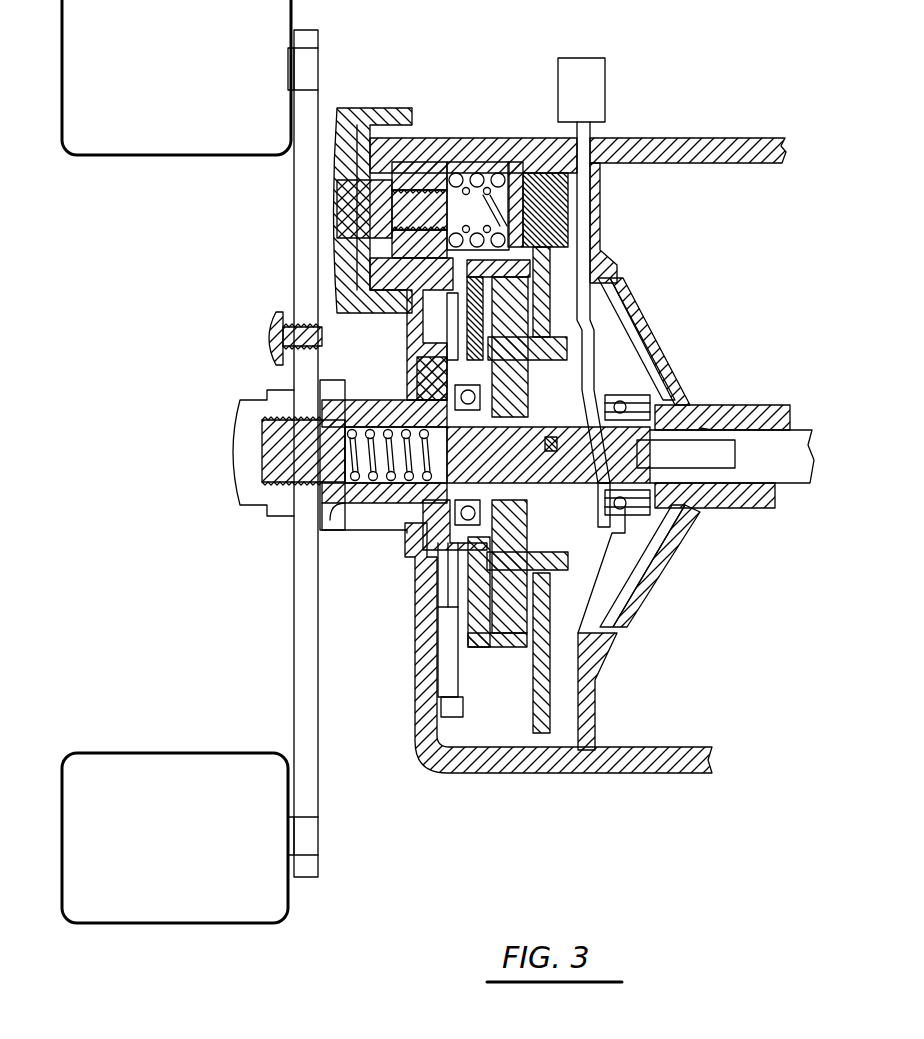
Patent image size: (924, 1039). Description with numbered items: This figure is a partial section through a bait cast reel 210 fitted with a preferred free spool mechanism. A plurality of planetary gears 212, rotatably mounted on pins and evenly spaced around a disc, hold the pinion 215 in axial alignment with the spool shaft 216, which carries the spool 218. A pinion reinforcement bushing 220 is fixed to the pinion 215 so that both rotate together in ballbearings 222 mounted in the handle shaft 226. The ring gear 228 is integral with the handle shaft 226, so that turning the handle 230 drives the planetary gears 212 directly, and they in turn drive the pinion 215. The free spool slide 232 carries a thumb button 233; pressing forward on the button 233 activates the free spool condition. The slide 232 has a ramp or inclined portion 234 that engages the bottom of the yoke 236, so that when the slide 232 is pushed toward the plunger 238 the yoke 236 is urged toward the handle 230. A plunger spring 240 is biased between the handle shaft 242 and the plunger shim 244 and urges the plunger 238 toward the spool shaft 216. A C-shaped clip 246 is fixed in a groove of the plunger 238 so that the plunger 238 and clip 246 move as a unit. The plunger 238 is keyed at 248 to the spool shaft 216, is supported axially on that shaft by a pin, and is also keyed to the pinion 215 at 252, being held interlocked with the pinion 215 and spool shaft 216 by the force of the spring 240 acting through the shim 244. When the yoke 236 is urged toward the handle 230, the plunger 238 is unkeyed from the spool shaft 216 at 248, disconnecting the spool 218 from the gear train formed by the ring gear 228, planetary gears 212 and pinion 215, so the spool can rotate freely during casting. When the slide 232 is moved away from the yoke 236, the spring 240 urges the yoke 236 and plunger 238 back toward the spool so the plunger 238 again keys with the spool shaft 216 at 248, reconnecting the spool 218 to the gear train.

The bait cast reel 210 is at (742, 300).
The planetary gears 212 is at (500, 580).
The pinion 215 is at (418, 525).
The spool shaft 216 is at (793, 437).
The spool 218 is at (688, 420).
The pinion reinforcement bushing 220 is at (457, 420).
The ballbearings 222 is at (440, 380).
The handle shaft 226 is at (325, 496).
The ring gear 228 is at (497, 647).
The handle 230 is at (305, 654).
The free spool slide 232 is at (583, 197).
The thumb button 233 is at (588, 83).
The ramp or inclined portion 234 is at (637, 338).
The yoke 236 is at (578, 518).
The plunger 238 is at (550, 437).
The plunger spring 240 is at (327, 410).
The handle shaft 242 is at (288, 443).
The plunger shim 244 is at (420, 410).
The C-shaped clip 246 is at (497, 455).
The key location to spool shaft 248 is at (700, 428).
The key location to pinion gear 252 is at (330, 500).